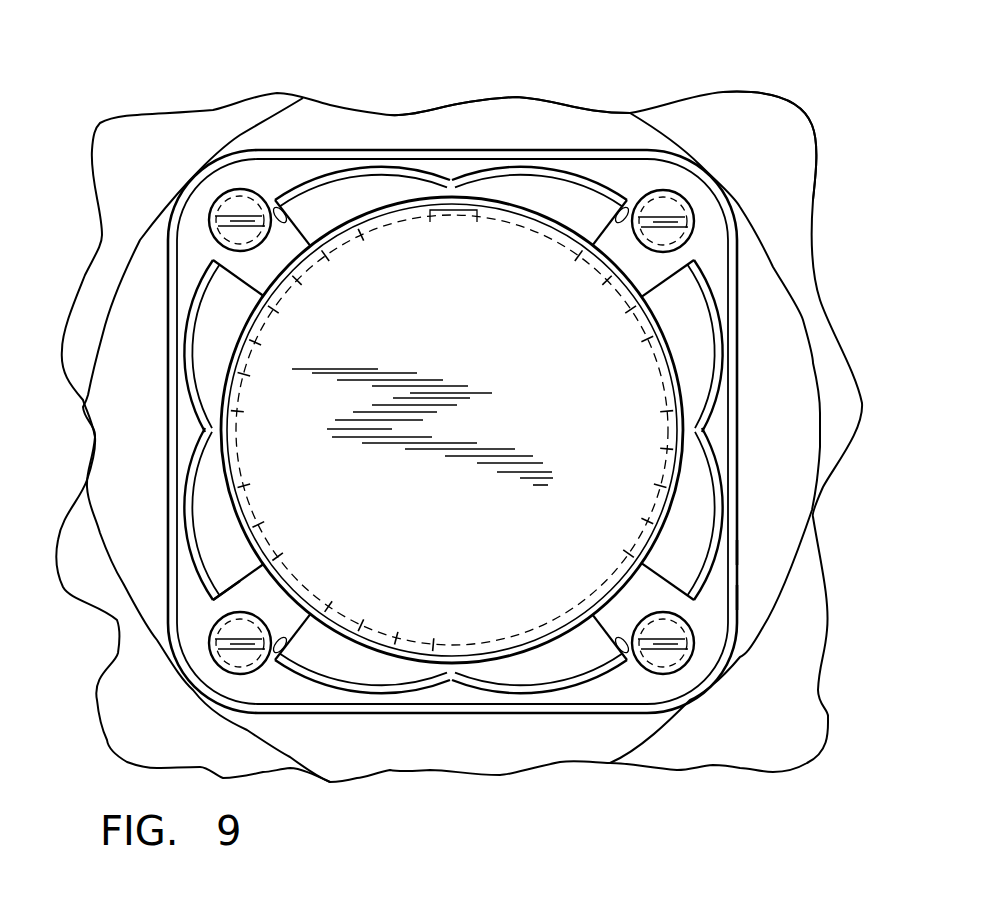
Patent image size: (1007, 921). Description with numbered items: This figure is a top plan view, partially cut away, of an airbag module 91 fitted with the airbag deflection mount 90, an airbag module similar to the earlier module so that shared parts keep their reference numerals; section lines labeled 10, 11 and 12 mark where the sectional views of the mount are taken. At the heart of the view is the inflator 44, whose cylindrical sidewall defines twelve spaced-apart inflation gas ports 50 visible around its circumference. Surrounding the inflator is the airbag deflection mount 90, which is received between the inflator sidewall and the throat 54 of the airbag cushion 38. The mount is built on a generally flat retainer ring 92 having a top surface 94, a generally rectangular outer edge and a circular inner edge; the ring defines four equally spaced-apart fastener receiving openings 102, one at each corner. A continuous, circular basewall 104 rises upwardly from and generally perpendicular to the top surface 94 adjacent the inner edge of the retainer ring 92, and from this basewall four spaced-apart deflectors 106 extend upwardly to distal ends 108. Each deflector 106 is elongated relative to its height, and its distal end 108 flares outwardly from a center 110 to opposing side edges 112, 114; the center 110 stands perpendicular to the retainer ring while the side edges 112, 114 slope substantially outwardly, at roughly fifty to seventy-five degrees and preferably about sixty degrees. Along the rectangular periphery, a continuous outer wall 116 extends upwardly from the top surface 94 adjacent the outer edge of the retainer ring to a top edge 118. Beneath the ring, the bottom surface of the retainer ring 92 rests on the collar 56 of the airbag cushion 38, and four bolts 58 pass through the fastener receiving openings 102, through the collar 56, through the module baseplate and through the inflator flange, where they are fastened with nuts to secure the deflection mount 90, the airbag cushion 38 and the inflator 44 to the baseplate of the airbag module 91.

The airbag deflection mount 10 is at (613, 470).
The section line 11- 11 is at (577, 427).
The section line 12- 12 is at (601, 344).
The airbag cushion 38 is at (752, 108).
The inflator 44 is at (492, 262).
The inflation gas ports 50 is at (325, 252).
The throat 54 is at (797, 140).
The collar 56 is at (763, 267).
The bolts 58 is at (208, 220).
The airbag deflection mount 90 is at (355, 146).
The airbag module 91 is at (555, 66).
The retainer ring 92 is at (198, 608).
The top surface 94 is at (187, 638).
The fastener receiving openings 102 is at (227, 183).
The basewall 104 is at (287, 605).
The deflectors 106 is at (449, 178).
The distal ends 108 is at (530, 190).
The center 110 is at (445, 190).
The side edge 112 is at (228, 190).
The side edge 114 is at (627, 205).
The outer wall 116 is at (738, 552).
The top edge 118 is at (733, 597).